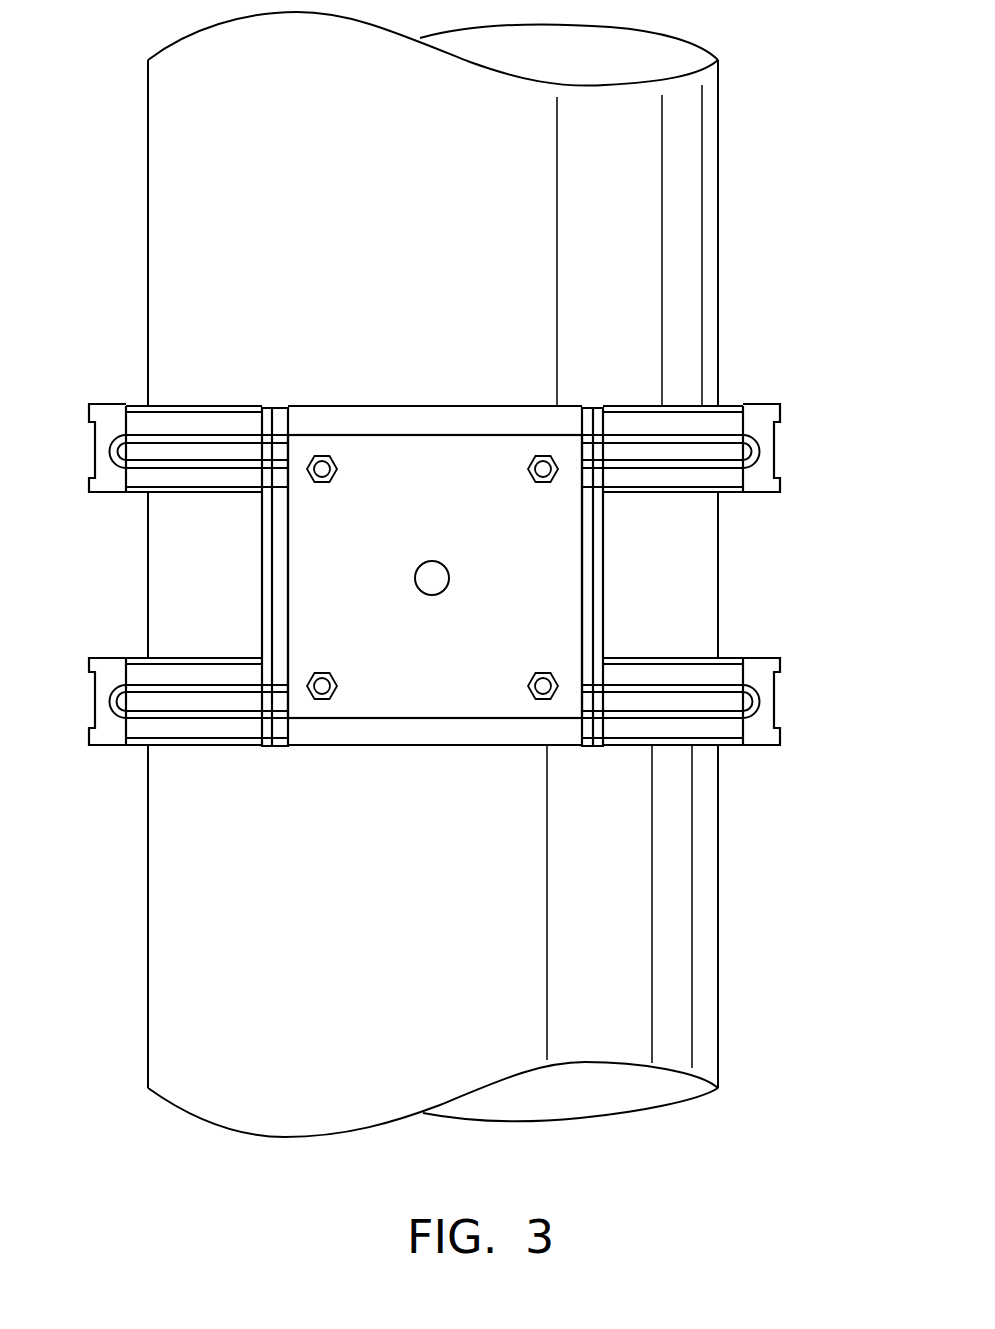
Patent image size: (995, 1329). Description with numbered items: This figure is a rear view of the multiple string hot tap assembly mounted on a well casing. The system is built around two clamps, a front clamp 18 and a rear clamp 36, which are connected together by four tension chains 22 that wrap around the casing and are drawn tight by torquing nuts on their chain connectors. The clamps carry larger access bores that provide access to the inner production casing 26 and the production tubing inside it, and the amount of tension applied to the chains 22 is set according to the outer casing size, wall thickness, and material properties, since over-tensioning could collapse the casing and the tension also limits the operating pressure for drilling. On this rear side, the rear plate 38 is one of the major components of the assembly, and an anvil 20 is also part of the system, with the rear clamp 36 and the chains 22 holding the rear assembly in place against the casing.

The front clamp 18 is at (760, 407).
The anvil 20 is at (625, 408).
The tension chain 22 is at (220, 408).
The production casing 26 is at (718, 165).
The rear clamp 36 is at (407, 408).
The rear plate 38 is at (437, 435).